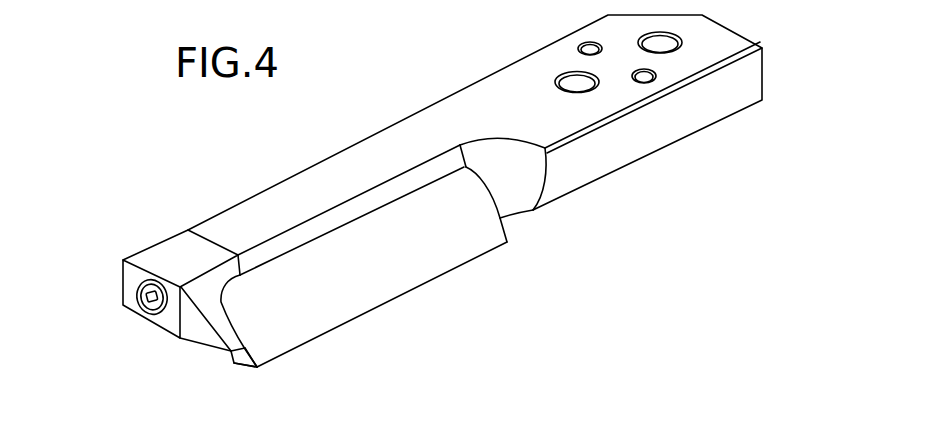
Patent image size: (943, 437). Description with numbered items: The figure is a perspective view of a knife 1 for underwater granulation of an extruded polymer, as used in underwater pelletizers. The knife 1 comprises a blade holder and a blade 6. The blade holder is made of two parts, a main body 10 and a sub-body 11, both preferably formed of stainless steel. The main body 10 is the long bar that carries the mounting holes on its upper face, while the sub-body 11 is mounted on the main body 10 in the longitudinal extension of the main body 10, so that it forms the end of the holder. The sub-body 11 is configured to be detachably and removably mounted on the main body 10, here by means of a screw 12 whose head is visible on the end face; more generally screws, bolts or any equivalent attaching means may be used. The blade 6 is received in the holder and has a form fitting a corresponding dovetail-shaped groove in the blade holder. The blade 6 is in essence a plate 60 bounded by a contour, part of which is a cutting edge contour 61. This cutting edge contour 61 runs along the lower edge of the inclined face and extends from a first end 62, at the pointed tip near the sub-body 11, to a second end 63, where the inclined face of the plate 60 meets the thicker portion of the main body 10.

The knife 1 is at (94, 131).
The main body 10 is at (428, 128).
The sub-body 11 is at (135, 279).
The screw 12 is at (153, 316).
The blade 6 is at (431, 304).
The plate 60 is at (378, 284).
The cutting edge contour 61 is at (326, 341).
The first end 62 is at (256, 380).
The second end 63 is at (522, 247).